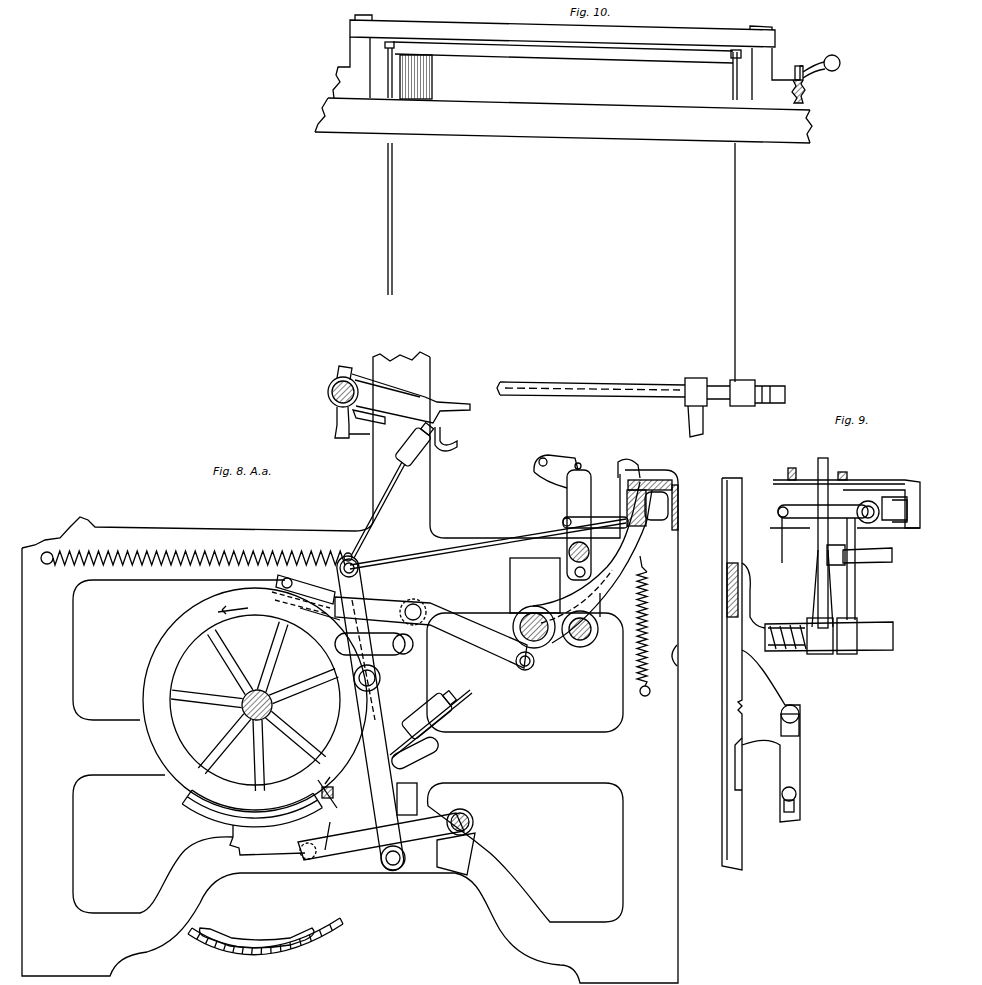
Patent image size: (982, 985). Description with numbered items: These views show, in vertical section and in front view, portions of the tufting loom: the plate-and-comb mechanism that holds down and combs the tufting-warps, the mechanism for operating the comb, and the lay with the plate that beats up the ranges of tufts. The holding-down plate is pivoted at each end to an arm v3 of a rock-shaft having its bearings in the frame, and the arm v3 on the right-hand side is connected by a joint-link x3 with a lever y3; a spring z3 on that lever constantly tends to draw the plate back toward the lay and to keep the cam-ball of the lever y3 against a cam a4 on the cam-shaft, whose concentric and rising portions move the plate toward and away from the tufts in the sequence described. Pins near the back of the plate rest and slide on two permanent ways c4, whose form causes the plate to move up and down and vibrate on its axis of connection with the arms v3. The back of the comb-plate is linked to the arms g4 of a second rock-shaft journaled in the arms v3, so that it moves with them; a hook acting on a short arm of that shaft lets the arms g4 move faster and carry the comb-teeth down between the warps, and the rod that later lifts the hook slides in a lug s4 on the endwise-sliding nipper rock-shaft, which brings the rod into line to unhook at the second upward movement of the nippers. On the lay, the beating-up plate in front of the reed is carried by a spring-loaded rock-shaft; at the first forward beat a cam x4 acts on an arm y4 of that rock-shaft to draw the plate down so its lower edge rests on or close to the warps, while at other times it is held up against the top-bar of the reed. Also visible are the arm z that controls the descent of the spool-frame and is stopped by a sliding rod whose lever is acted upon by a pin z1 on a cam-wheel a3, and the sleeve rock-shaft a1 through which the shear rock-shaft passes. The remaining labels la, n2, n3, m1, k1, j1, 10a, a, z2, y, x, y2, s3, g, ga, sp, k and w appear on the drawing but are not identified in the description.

In FIG. 10, the rail la is at (563, 52).
In FIG. 10, the left rod n2 is at (386, 168).
In FIG. 10, the right rod n3 is at (741, 216).
In FIG. 10, the bracket m1 is at (793, 78).
In FIG. 10, the handle k1 is at (828, 63).
In FIG. 10, the pin z1 is at (591, 389).
In FIG. 10, the collar j1 is at (696, 407).
In FIG. 10, the shaft end 10a is at (746, 387).
In FIG. 8, the frame a is at (350, 667).
In FIG. 9, the frame a is at (743, 674).
In FIG. 8, the spring z2 is at (193, 552).
In FIG. 8, the cam a4 is at (255, 700).
In FIG. 8, the rock-shaft a1 is at (251, 800).
In FIG. 8, the lug s4 is at (327, 784).
In FIG. 8, the cam x4 is at (280, 838).
In FIG. 8, the arm y4 is at (389, 838).
In FIG. 8, the cam-wheel a3 is at (265, 936).
In FIG. 8, the arm z is at (399, 408).
In FIG. 8, the cylinder y is at (412, 443).
In FIG. 8, the rod x is at (488, 515).
In FIG. 8, the pitman lever y2 is at (352, 712).
In FIG. 8, the pawl s3 is at (306, 605).
In FIG. 8, the lever y3 is at (434, 684).
In FIG. 8, the curved lever g is at (582, 565).
In FIG. 8, the arms v3 is at (589, 612).
In FIG. 8, the arms g4 is at (579, 521).
In FIG. 9, the arms g4 is at (845, 544).
In FIG. 8, the spring z3 is at (556, 469).
In FIG. 9, the spring z3 is at (822, 536).
In FIG. 8, the link ga is at (595, 519).
In FIG. 8, the permanent ways c4 is at (648, 494).
In FIG. 8, the spring sp is at (649, 626).
In FIG. 9, the joint-link x3 is at (767, 736).
In FIG. 9, the bar k is at (859, 551).
In FIG. 9, the worm shaft w is at (829, 636).